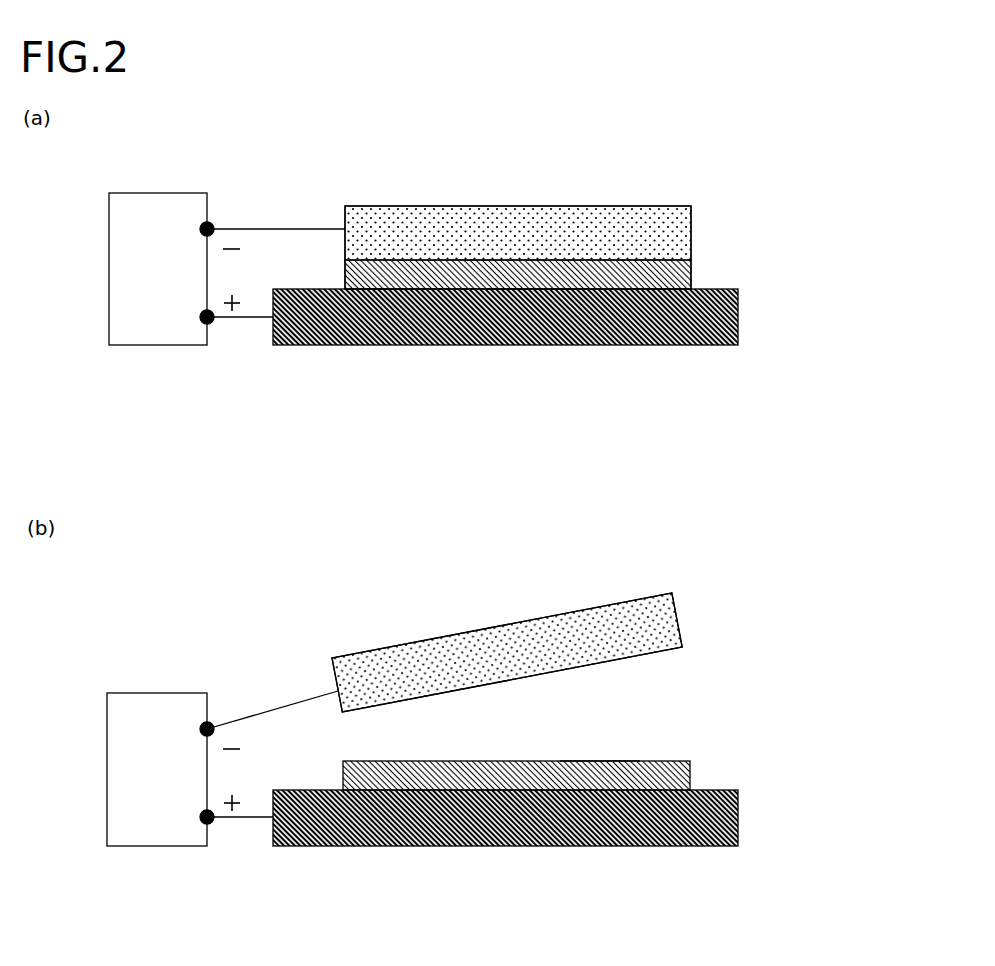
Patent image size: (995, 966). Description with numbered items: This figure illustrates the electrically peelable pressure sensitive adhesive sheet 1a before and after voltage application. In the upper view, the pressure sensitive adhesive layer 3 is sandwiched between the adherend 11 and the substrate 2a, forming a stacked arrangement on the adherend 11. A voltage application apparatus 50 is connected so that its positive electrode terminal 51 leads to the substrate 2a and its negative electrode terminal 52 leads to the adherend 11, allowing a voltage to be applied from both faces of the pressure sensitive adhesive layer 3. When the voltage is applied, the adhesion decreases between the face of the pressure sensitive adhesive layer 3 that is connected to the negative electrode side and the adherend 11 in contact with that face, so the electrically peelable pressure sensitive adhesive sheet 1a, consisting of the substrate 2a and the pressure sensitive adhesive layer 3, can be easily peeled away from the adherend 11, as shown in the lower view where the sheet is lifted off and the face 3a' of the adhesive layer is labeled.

The electrically peelable pressure sensitive adhesive sheet 1a is at (714, 198).
The substrate 2a is at (677, 240).
The pressure sensitive adhesive layer 3 is at (672, 278).
The face of the pressure sensitive adhesive layer connected to the negative electrod 3a' is at (658, 728).
The adherend 11 is at (713, 323).
The voltage application apparatus 50 is at (155, 332).
The positive electrode terminal 51 is at (212, 322).
The negative electrode terminal 52 is at (212, 224).